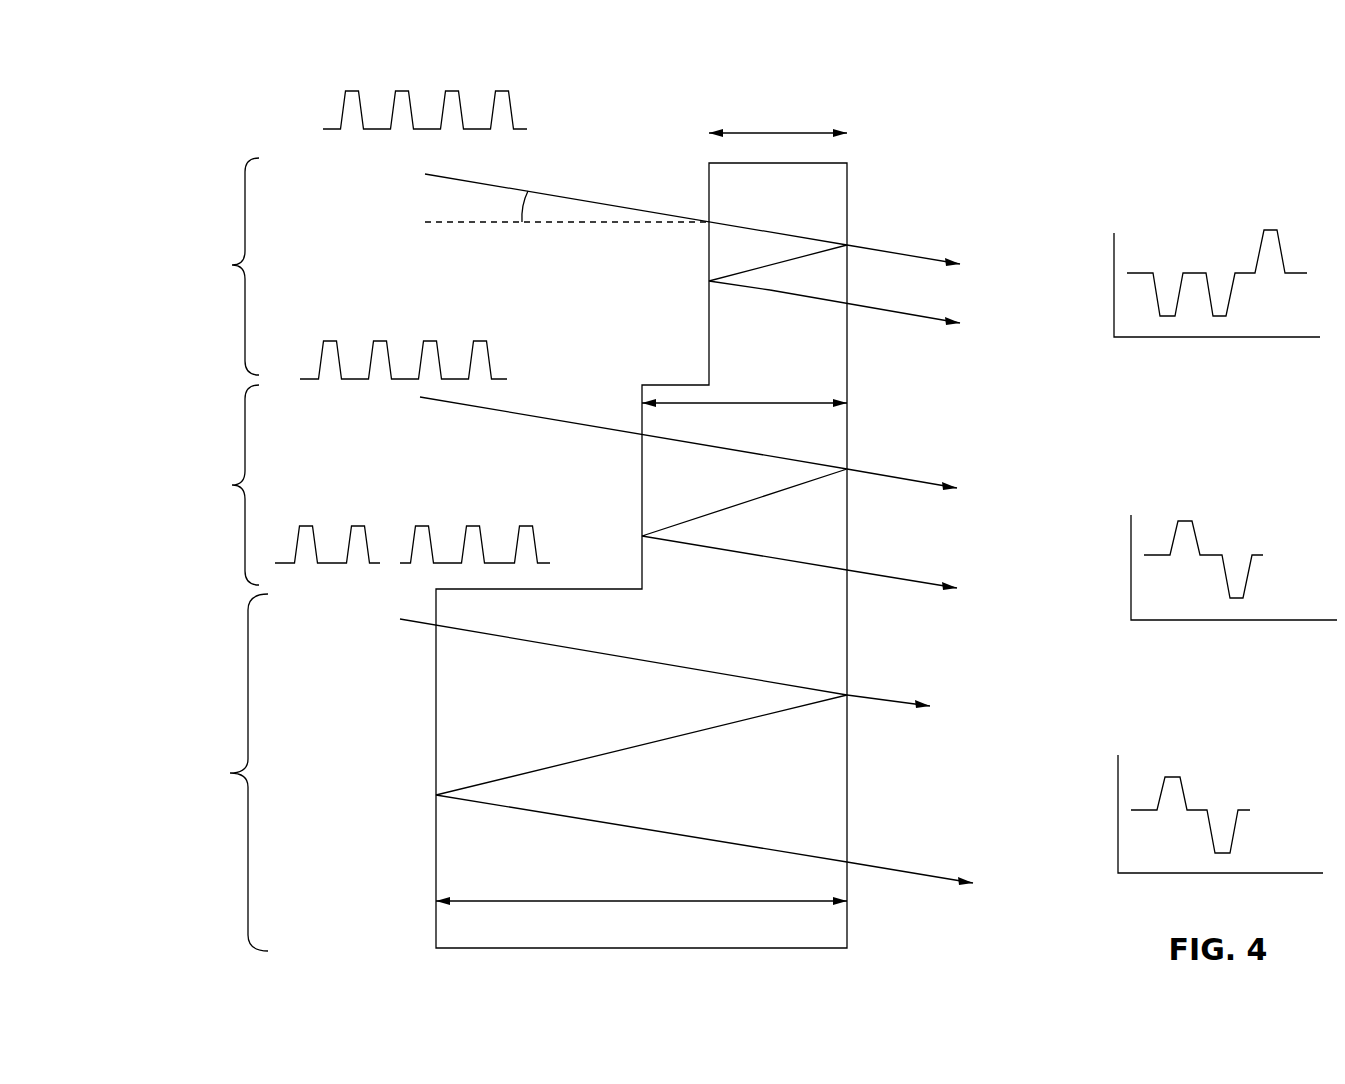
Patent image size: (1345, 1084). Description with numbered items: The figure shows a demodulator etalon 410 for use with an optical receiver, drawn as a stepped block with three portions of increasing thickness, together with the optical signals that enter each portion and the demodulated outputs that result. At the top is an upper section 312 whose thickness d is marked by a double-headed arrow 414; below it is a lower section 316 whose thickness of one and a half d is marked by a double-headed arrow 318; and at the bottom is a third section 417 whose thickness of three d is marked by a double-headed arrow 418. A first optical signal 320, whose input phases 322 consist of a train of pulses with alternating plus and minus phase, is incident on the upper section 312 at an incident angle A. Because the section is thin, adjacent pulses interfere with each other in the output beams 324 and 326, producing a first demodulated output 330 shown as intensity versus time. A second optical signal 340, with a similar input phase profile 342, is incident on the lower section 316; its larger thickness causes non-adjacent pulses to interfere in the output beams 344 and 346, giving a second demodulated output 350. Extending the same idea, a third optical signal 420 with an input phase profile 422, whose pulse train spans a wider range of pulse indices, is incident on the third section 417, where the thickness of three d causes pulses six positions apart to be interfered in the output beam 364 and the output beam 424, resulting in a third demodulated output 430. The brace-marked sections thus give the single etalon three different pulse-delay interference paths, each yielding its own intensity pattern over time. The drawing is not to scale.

The upper section 312 is at (220, 266).
The lower section 316 is at (220, 485).
The double-headed arrow 318 is at (763, 402).
The first optical signal 320 is at (557, 193).
The first optical signal input phases 322 is at (517, 101).
The output beam 324 is at (877, 247).
The output beam 326 is at (865, 308).
The first demodulated output 330 is at (1210, 294).
The second optical signal 340 is at (520, 408).
The second optical signal input phases 342 is at (495, 352).
The output beam 344 is at (883, 478).
The output beam 346 is at (872, 575).
The second demodulated output 350 is at (1260, 555).
The output beam 364 is at (880, 869).
The demodulator etalon 410 is at (847, 177).
The double-headed arrow 414 is at (802, 132).
The third section 417 is at (217, 772).
The double-headed arrow 418 is at (525, 900).
The third optical signal 420 is at (643, 658).
The input phase profile 422 is at (540, 545).
The output beam 424 is at (862, 698).
The third demodulated output 430 is at (1245, 810).